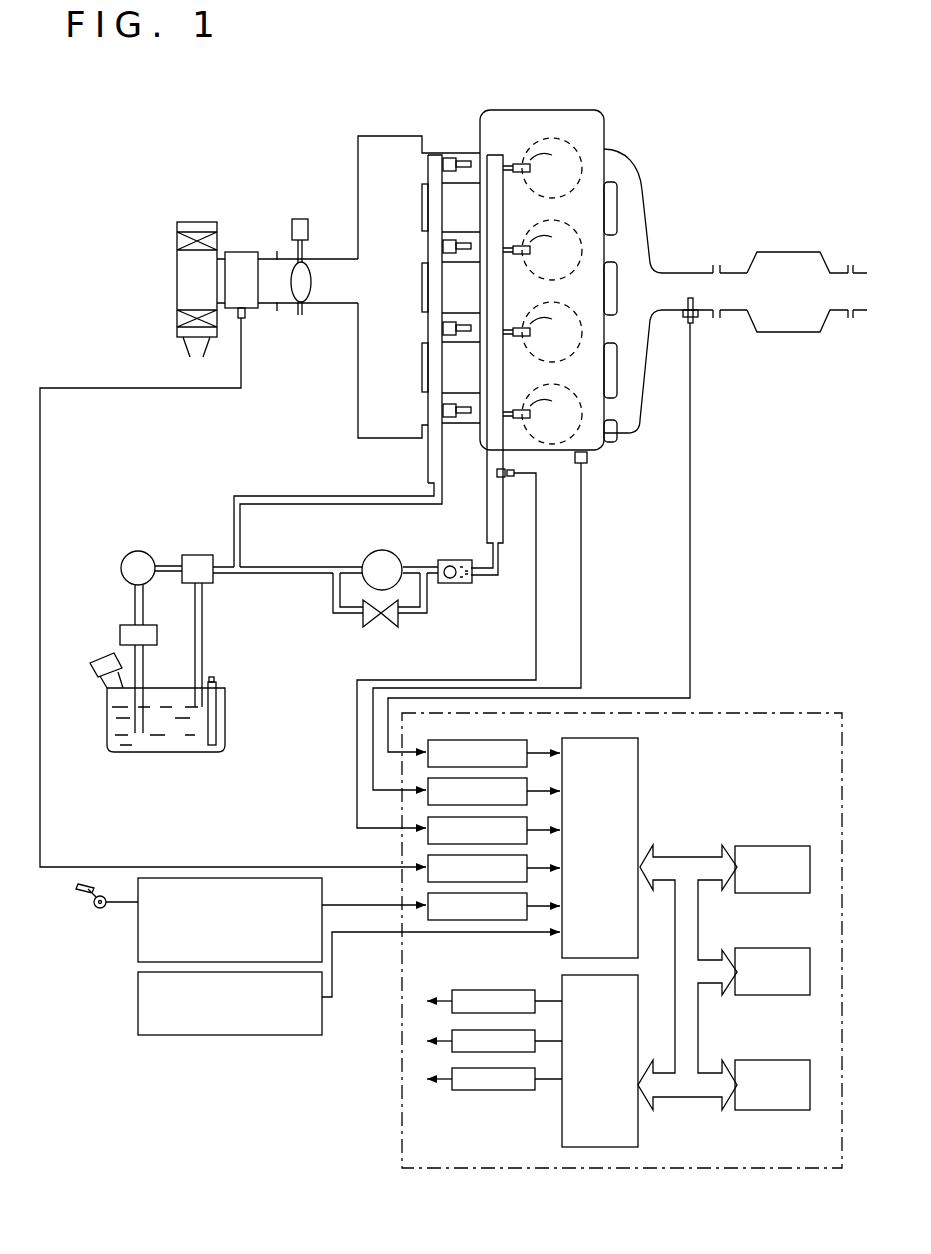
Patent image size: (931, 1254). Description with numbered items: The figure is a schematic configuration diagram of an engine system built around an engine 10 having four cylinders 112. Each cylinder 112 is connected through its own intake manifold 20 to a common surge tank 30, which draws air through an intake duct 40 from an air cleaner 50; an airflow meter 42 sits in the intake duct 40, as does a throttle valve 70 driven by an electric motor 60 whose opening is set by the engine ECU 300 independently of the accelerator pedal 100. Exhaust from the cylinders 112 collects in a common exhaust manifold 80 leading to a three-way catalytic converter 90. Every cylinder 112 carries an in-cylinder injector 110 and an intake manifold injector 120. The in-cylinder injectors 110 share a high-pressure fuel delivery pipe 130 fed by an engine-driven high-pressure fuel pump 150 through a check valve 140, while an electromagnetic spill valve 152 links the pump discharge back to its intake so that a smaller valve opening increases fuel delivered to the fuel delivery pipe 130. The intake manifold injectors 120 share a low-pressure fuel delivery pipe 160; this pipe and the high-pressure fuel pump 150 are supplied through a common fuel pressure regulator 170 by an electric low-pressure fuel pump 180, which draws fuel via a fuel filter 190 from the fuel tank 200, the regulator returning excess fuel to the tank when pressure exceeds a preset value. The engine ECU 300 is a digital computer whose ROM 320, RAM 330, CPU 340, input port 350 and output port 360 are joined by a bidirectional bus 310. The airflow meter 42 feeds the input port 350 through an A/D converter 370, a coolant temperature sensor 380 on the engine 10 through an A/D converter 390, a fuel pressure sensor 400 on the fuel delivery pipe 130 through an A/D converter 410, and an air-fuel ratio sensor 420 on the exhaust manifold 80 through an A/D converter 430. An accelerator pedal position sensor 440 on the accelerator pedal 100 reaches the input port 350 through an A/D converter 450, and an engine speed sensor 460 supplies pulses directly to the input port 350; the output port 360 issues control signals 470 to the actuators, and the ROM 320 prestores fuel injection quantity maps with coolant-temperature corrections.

The engine 10 is at (603, 106).
The intake manifold 20 is at (438, 150).
The surge tank 30 is at (378, 136).
The intake duct 40 is at (336, 259).
The airflow meter 42 is at (241, 252).
The air cleaner 50 is at (177, 272).
The electric motor 60 is at (296, 219).
The throttle valve 70 is at (305, 300).
The exhaust manifold 80 is at (642, 190).
The three-way catalytic converter 90 is at (790, 252).
The accelerator pedal 100 is at (88, 890).
The in-cylinder injector 110 is at (538, 292).
The cylinder 112 is at (580, 150).
The intake manifold injector 120 is at (443, 165).
The fuel delivery pipe 130 is at (495, 153).
The check valve 140 is at (457, 584).
The high-pressure fuel pump 150 is at (366, 554).
The electromagnetic spill valve 152 is at (383, 628).
The fuel delivery pipe 160 is at (428, 462).
The fuel pressure regulator 170 is at (198, 554).
The low-pressure fuel pump 180 is at (141, 551).
The fuel filter 190 is at (122, 625).
The fuel tank 200 is at (165, 752).
The engine ECU 300 is at (799, 705).
The bidirectional bus 310 is at (684, 856).
The ROM 320 is at (766, 846).
The RAM 330 is at (766, 948).
The CPU 340 is at (766, 1060).
The input port 350 is at (640, 762).
The output port 360 is at (640, 1132).
The A/D converter 370 is at (412, 866).
The coolant temperature sensor 380 is at (582, 465).
The A/D converter 390 is at (412, 789).
The fuel pressure sensor 400 is at (516, 477).
The A/D converter 410 is at (412, 827).
The air-fuel ratio sensor 420 is at (694, 324).
The A/D converter 430 is at (412, 751).
The accelerator pedal position sensor 440 is at (138, 918).
The A/D converter 450 is at (412, 904).
The engine speed sensor 460 is at (138, 1000).
The output drive signals 470 is at (450, 1013).